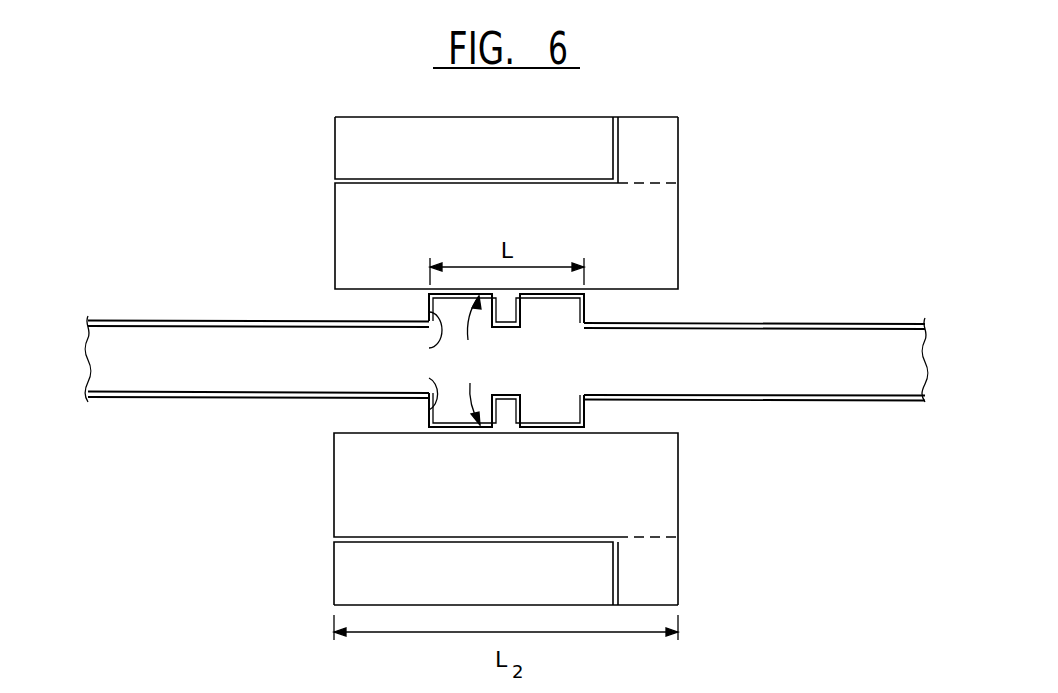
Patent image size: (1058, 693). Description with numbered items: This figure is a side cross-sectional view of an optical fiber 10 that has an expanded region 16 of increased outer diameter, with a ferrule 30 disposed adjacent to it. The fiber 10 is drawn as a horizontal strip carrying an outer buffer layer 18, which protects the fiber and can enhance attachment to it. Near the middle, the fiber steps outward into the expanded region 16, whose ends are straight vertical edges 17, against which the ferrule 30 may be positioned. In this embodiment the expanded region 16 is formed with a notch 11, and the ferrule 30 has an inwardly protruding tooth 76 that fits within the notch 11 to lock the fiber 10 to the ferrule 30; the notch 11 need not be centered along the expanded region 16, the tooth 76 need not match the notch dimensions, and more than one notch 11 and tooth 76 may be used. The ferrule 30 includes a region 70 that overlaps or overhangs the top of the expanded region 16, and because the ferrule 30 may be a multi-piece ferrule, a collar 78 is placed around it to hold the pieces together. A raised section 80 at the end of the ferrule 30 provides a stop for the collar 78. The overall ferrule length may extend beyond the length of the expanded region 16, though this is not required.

The optical fiber 10 is at (155, 321).
The notch 11 is at (505, 328).
The expanded region 16 is at (470, 360).
The vertical edge 17 is at (432, 346).
The buffer layer 18 is at (272, 320).
The ferrule 30 is at (496, 359).
The overlapping region 70 is at (474, 232).
The inwardly protruding tooth 76 is at (513, 298).
The collar 78 is at (493, 163).
The raised section 80 is at (673, 153).